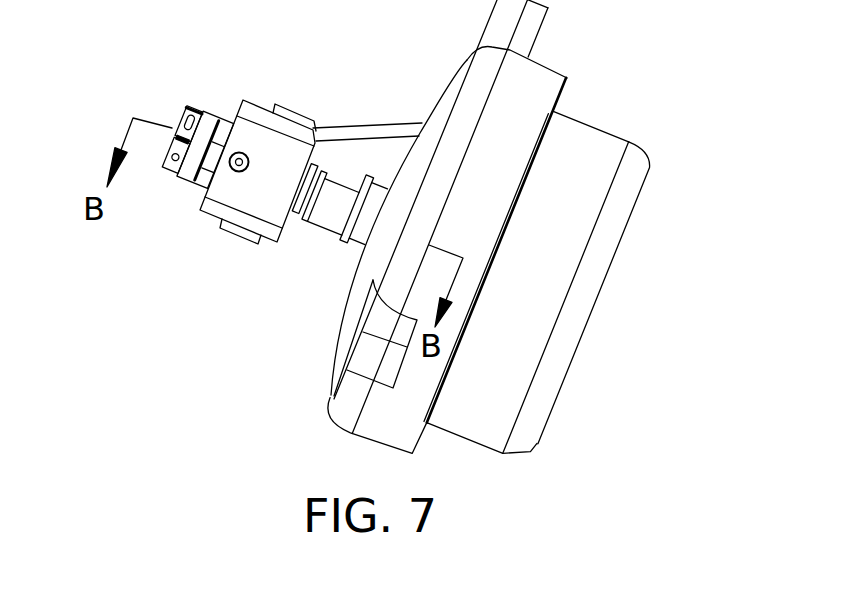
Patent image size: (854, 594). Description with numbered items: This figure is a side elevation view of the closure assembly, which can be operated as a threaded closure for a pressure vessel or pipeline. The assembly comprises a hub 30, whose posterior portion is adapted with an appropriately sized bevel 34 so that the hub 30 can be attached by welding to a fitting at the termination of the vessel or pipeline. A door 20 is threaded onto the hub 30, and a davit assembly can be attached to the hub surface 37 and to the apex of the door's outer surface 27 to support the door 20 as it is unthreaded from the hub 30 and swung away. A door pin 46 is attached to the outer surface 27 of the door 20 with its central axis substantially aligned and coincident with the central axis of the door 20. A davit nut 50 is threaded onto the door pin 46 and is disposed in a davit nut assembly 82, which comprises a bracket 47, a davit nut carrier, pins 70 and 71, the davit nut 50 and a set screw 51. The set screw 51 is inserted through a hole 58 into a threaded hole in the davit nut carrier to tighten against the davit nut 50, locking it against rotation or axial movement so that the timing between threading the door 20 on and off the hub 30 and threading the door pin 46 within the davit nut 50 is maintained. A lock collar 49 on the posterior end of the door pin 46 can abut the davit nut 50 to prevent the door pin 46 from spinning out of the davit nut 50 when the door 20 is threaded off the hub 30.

The door 20 is at (547, 72).
The outer surface of door 27 is at (445, 92).
The hub 30 is at (515, 448).
The bevel 34 is at (649, 167).
The hub surface 37 is at (554, 201).
The door pin 46 is at (177, 125).
The bracket 47 is at (257, 108).
The lock collar 49 is at (197, 105).
The davit nut 50 is at (227, 115).
The set screw 51 is at (237, 172).
The hole 58 is at (229, 176).
The pin 70 is at (245, 238).
The pin 71 is at (292, 112).
The davit nut assembly 82 is at (148, 292).